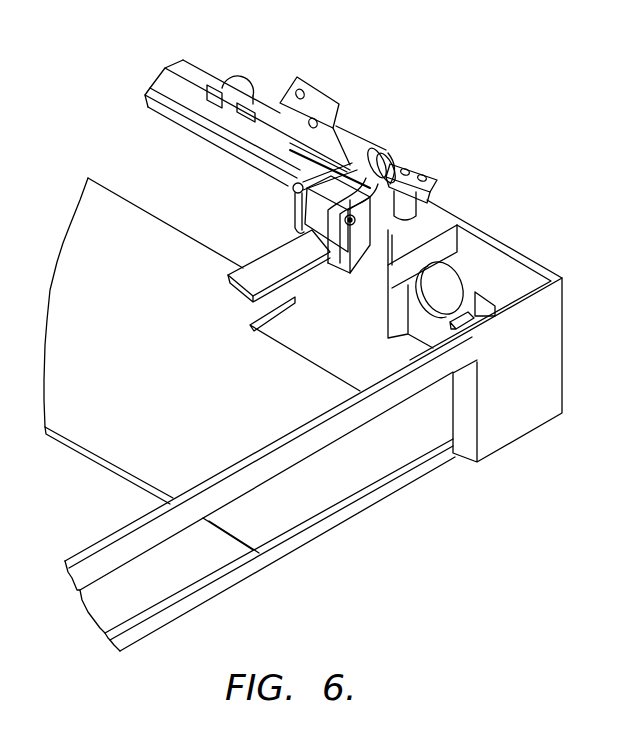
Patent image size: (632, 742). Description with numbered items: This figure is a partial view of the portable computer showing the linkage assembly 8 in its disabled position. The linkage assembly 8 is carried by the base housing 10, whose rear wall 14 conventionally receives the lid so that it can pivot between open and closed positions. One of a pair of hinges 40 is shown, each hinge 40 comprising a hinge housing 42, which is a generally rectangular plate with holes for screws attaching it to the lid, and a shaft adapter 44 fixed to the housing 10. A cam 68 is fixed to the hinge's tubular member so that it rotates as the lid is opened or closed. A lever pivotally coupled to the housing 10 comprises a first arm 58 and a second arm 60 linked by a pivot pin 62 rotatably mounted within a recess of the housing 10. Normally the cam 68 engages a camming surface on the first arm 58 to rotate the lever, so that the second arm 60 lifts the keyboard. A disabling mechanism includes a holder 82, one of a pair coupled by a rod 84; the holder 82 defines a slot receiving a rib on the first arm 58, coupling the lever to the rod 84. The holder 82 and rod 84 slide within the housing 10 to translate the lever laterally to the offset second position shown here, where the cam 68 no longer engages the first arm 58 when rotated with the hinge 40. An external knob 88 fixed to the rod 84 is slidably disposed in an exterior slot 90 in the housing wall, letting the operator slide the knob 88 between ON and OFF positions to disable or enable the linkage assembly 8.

The linkage assembly 8 is at (488, 103).
The base housing 10 is at (521, 441).
The rear wall 14 is at (518, 276).
The hinge 40 is at (390, 128).
The hinge housing 42 is at (299, 80).
The shaft adapter 44 is at (438, 178).
The first arm 58 is at (291, 188).
The second arm 60 is at (271, 250).
The pivot pin 62 is at (333, 215).
The cam 68 is at (397, 160).
The holder 82 is at (368, 207).
The rod 84 is at (218, 108).
The knob 88 is at (238, 70).
The exterior slot 90 is at (230, 97).